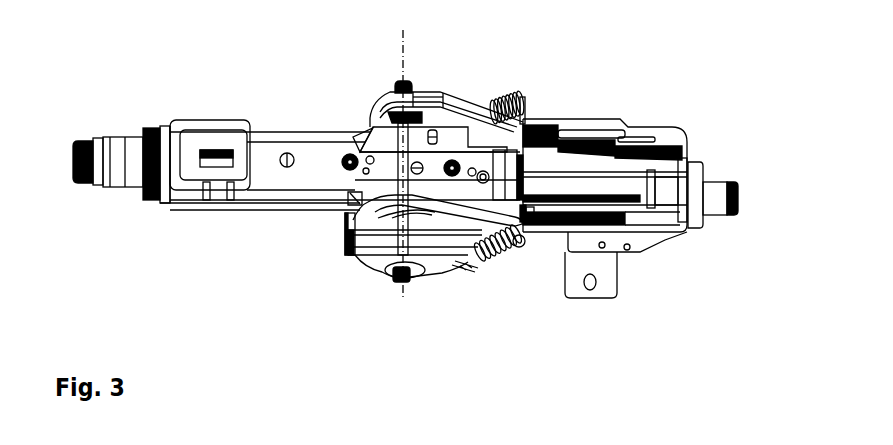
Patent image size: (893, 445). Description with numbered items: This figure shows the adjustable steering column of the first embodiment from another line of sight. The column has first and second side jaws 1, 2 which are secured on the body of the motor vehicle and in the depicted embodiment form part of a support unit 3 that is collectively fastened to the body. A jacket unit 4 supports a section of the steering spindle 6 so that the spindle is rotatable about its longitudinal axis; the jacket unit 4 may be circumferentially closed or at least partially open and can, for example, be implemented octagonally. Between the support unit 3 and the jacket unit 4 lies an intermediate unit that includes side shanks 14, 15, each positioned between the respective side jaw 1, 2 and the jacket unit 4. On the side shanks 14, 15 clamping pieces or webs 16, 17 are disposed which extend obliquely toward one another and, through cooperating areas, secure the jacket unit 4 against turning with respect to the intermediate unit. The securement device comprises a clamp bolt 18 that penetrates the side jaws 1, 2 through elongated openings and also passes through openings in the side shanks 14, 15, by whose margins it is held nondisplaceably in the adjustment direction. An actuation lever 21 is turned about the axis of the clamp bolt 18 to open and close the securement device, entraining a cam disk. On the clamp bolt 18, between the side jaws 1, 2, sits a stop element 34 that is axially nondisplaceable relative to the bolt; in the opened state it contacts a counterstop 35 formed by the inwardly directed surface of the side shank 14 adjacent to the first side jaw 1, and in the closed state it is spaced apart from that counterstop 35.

The first side jaw 1 is at (390, 92).
The second side jaw 2 is at (353, 235).
The support unit 3 is at (462, 278).
The jacket unit 4 is at (247, 185).
The steering spindle 6 is at (113, 178).
The side shank 14 is at (515, 146).
The side shank 15 is at (348, 215).
The clamping piece 16 is at (372, 125).
The clamping piece 17 is at (353, 200).
The clamp bolt 18 is at (340, 128).
The actuation lever 21 is at (376, 275).
The stop element 34 is at (432, 104).
The counterstop 35 is at (407, 112).